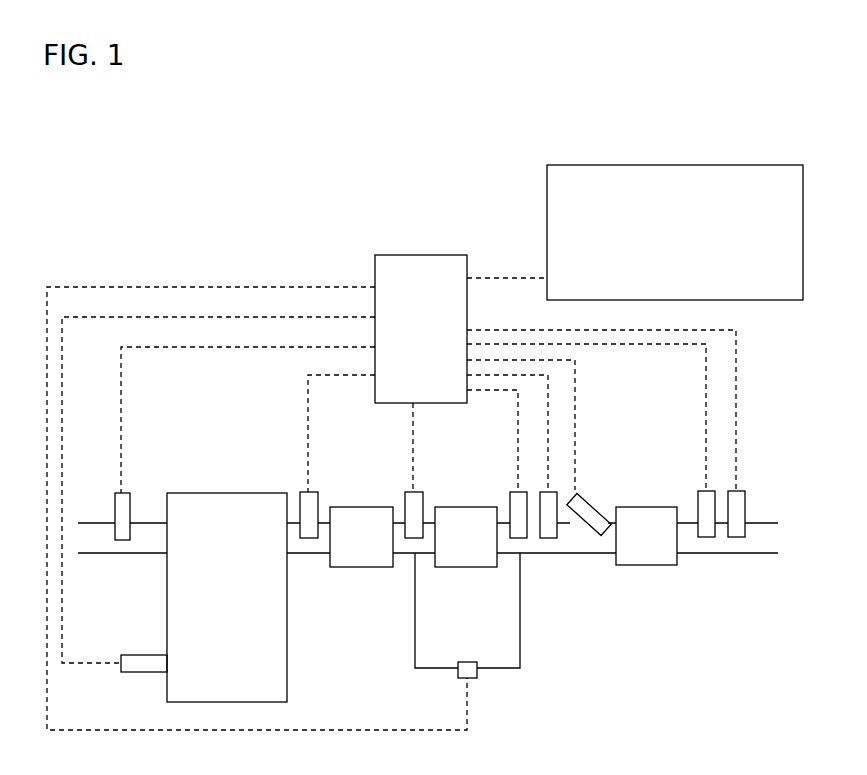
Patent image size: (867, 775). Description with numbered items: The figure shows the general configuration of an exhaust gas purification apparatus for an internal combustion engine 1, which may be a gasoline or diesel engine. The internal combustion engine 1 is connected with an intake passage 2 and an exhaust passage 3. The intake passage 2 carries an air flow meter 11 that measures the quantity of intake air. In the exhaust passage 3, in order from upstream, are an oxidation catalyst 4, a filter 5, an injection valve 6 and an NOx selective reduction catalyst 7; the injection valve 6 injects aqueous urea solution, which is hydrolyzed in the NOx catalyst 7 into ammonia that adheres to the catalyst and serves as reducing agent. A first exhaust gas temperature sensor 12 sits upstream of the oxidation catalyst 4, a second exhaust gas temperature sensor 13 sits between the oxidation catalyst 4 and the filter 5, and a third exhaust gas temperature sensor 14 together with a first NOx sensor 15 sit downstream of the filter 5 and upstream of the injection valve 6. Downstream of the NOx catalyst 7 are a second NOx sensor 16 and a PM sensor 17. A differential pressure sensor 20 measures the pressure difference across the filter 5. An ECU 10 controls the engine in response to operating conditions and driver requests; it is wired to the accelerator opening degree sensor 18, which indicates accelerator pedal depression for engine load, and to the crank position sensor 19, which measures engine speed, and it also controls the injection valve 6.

The internal combustion engine 1 is at (225, 493).
The intake passage 2 is at (118, 553).
The exhaust passage 3 is at (305, 553).
The oxidation catalyst 4 is at (360, 567).
The filter 5 is at (465, 567).
The injection valve 6 is at (592, 497).
The NOx selective reduction catalyst 7 is at (645, 565).
The ECU 10 is at (373, 265).
The air flow meter 11 is at (130, 497).
The first exhaust gas temperature sensor 12 is at (318, 500).
The second exhaust gas temperature sensor 13 is at (405, 500).
The third exhaust gas temperature sensor 14 is at (510, 500).
The first NOx sensor 15 is at (548, 540).
The second NOx sensor 16 is at (698, 498).
The PM sensor 17 is at (745, 498).
The accelerator opening degree sensor 18 is at (777, 300).
The crank position sensor 19 is at (140, 672).
The differential pressure sensor 20 is at (478, 678).